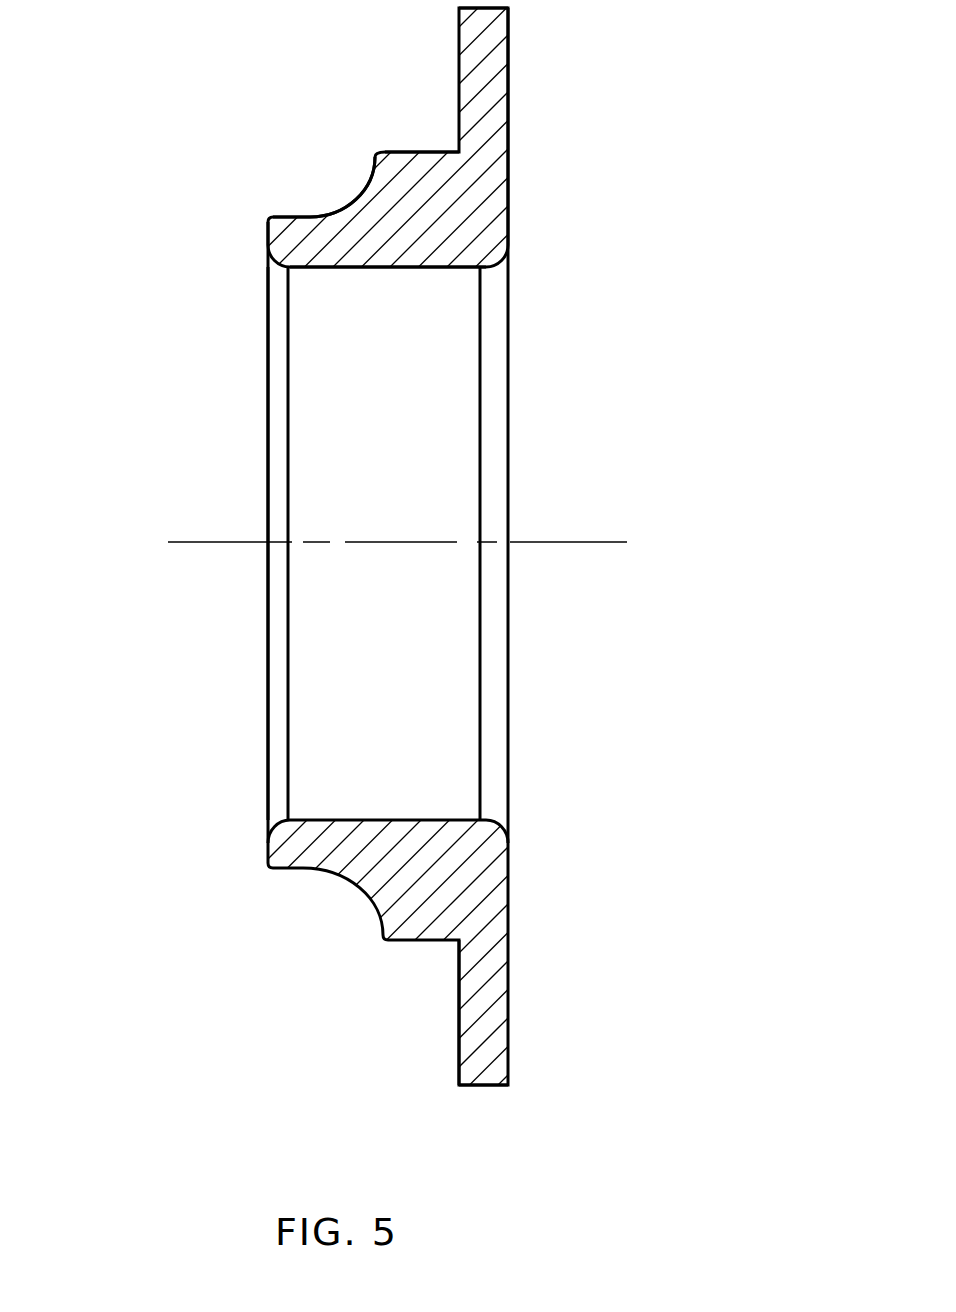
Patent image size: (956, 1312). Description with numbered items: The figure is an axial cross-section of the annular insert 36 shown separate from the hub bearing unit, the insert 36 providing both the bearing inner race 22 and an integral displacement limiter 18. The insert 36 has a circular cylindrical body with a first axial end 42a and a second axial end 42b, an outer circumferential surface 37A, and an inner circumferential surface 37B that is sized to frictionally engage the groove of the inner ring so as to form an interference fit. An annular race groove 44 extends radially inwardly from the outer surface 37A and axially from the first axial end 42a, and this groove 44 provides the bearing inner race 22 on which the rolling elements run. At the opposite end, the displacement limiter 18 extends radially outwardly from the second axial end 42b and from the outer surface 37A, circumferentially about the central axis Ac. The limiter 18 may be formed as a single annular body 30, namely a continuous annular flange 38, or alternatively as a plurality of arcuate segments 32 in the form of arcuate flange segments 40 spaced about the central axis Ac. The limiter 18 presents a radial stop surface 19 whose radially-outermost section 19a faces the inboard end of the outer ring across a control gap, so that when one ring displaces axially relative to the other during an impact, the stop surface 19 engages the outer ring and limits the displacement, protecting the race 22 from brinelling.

The displacement limiter 18 is at (540, 1016).
The radial stop surface 19 is at (452, 993).
The radially-outermost section of the stop surface 19a is at (460, 1058).
The bearing inner race 22 is at (302, 206).
The single annular body 30 is at (552, 22).
The arcuate segments 32 is at (521, 30).
The annular insert 36 is at (168, 334).
The outer circumferential surface 37A is at (418, 150).
The inner circumferential surface 37B is at (400, 268).
The continuous annular flange 38 is at (566, 80).
The arcuate flange segments 40 is at (497, 87).
The first axial end 42a is at (275, 236).
The second axial end 42b is at (499, 206).
The annular race groove 44 is at (342, 210).
The central axis Ac is at (604, 542).